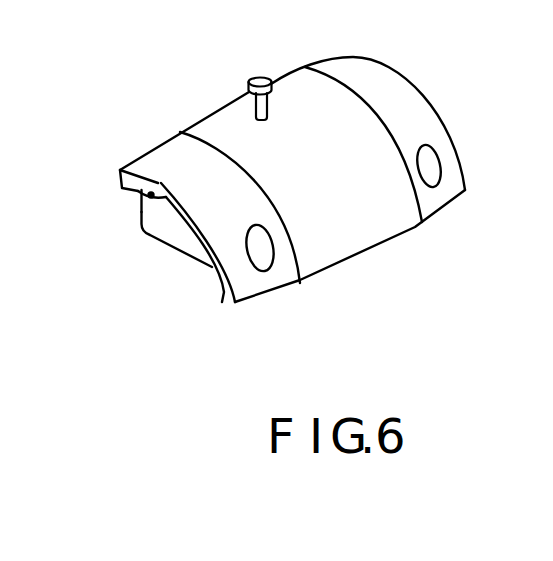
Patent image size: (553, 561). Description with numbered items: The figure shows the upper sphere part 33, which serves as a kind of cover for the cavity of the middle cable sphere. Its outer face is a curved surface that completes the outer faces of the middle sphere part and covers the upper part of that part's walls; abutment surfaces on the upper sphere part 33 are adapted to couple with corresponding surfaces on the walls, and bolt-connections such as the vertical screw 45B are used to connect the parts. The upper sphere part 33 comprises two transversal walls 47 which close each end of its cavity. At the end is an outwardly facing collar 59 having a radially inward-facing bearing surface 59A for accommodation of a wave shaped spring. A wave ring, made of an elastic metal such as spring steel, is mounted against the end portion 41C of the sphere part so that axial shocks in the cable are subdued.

The upper sphere part 33 is at (462, 157).
The vertical screw 45B is at (259, 78).
The outwardly facing collar 59 is at (223, 301).
The radially inward-facing bearing surface 59A is at (160, 186).
The transversal wall 47 is at (173, 222).
The end portion 41C is at (141, 210).